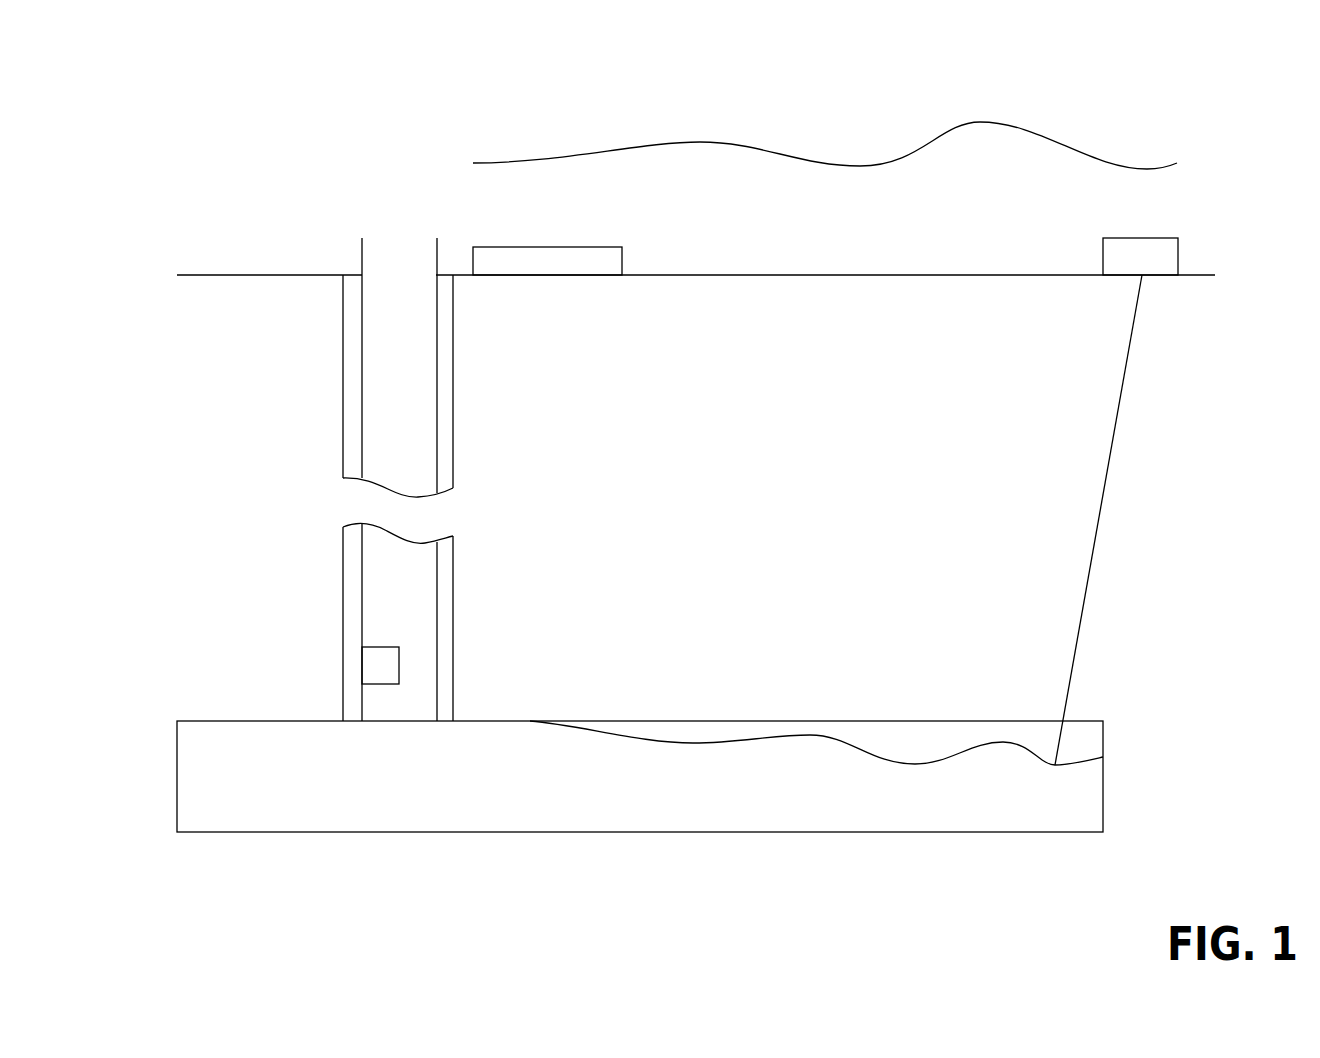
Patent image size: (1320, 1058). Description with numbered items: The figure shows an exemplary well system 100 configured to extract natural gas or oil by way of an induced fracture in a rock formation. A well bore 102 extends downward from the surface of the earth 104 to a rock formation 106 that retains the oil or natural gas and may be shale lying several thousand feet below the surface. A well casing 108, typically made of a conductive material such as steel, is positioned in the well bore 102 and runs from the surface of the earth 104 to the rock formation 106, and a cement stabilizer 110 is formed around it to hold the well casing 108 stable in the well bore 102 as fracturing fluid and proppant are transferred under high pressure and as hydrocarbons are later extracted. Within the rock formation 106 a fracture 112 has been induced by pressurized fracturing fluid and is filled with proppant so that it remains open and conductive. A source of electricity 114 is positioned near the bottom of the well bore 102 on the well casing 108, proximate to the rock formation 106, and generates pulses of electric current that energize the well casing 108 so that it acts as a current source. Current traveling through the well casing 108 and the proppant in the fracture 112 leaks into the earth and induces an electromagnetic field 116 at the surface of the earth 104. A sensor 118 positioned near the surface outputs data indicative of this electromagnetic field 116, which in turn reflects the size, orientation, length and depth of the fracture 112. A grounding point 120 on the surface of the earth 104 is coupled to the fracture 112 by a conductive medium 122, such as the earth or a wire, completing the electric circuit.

The well system 100 is at (276, 83).
The well bore 102 is at (428, 446).
The surface of the earth 104 is at (955, 275).
The rock formation 106 is at (213, 721).
The well casing 108 is at (363, 352).
The cement stabilizer 110 is at (454, 425).
The fracture 112 is at (930, 765).
The source of electricity 114 is at (400, 664).
The electromagnetic field 116 is at (1035, 133).
The sensor 118 is at (548, 247).
The grounding point 120 is at (1140, 238).
The conductive medium 122 is at (1093, 540).